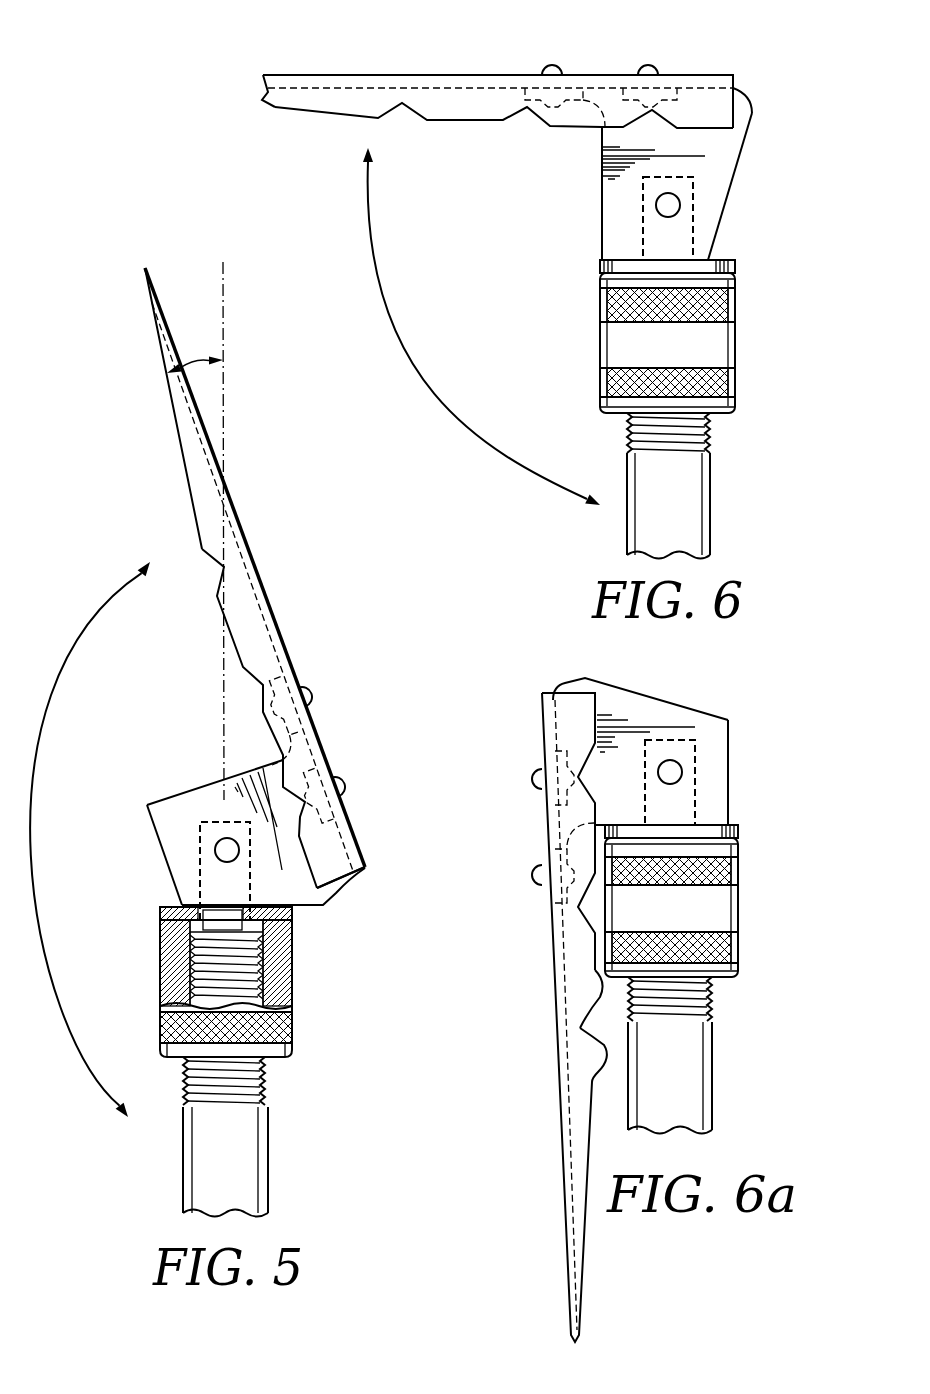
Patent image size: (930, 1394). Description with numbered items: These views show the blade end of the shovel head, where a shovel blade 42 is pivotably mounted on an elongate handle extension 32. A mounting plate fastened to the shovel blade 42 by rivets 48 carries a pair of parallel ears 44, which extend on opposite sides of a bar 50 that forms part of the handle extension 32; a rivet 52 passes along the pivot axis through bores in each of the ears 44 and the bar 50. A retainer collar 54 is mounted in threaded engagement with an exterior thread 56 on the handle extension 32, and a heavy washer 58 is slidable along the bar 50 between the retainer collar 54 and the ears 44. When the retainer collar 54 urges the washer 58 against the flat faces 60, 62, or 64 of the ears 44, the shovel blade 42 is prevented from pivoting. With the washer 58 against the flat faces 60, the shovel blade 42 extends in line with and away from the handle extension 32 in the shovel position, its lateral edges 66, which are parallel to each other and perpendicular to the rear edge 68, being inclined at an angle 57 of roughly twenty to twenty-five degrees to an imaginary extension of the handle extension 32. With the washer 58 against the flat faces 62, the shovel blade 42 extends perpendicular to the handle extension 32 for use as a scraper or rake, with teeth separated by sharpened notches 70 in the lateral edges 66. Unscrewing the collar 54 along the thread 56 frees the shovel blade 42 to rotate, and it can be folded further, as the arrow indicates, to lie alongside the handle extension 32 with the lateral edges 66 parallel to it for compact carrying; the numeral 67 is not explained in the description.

In FIG. 6, the handle extension 32 is at (713, 483).
In FIG. 5, the handle extension 32 is at (185, 1118).
In FIG. 6, the shovel blade 42 is at (393, 73).
In FIG. 5, the shovel blade 42 is at (337, 758).
In FIG. 6a, the shovel blade 42 is at (552, 1098).
In FIG. 6, the ears 44 is at (722, 142).
In FIG. 5, the ears 44 is at (212, 797).
In FIG. 6, the rivets 48 is at (652, 68).
In FIG. 5, the rivets 48 is at (347, 782).
In FIG. 6, the bar 50 is at (693, 222).
In FIG. 5, the bar 50 is at (200, 848).
In FIG. 6, the rivet 52 is at (656, 211).
In FIG. 5, the rivet 52 is at (218, 840).
In FIG. 6a, the rivet 52 is at (685, 770).
In FIG. 6, the retainer collar 54 is at (600, 339).
In FIG. 5, the retainer collar 54 is at (160, 1052).
In FIG. 6, the exterior thread 56 is at (713, 425).
In FIG. 5, the exterior thread 56 is at (272, 1070).
In FIG. 6a, the exterior thread 56 is at (712, 993).
In FIG. 5, the angle 57 is at (198, 362).
In FIG. 6, the washer 58 is at (600, 264).
In FIG. 5, the washer 58 is at (158, 907).
In FIG. 6, the flat faces 60 is at (737, 177).
In FIG. 6a, the flat faces 60 is at (643, 692).
In FIG. 5, the flat faces 62 is at (175, 880).
In FIG. 6a, the flat faces 62 is at (733, 775).
In FIG. 6, the flat faces 64 is at (600, 170).
In FIG. 6, the lateral edges 66 is at (465, 125).
In FIG. 5, the lateral edges 66 is at (265, 725).
In FIG. 6a, the lateral edges 66 is at (572, 975).
In FIG. 6, the nut rim 67 is at (735, 280).
In FIG. 5, the rear edge 68 is at (365, 872).
In FIG. 6, the notches 70 is at (527, 117).
In FIG. 5, the notches 70 is at (262, 680).
In FIG. 6a, the notches 70 is at (580, 1075).